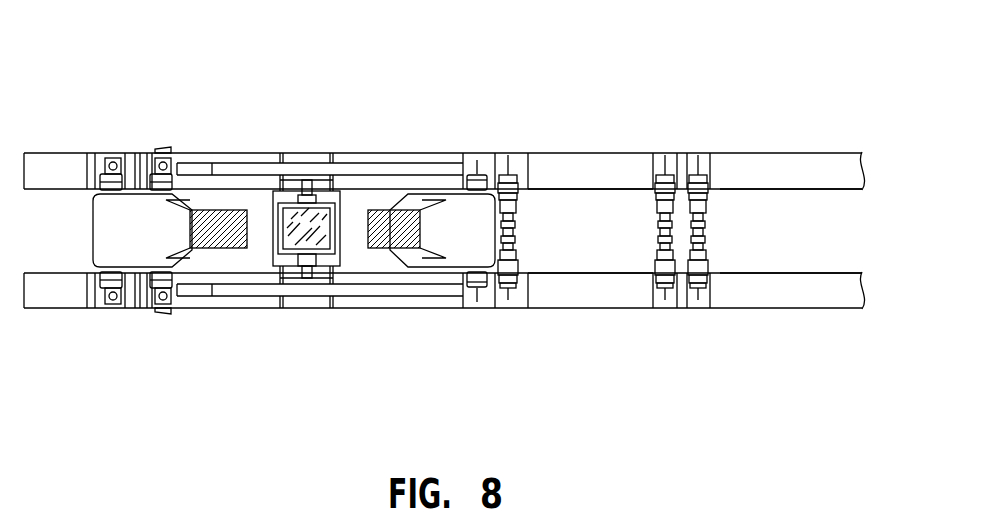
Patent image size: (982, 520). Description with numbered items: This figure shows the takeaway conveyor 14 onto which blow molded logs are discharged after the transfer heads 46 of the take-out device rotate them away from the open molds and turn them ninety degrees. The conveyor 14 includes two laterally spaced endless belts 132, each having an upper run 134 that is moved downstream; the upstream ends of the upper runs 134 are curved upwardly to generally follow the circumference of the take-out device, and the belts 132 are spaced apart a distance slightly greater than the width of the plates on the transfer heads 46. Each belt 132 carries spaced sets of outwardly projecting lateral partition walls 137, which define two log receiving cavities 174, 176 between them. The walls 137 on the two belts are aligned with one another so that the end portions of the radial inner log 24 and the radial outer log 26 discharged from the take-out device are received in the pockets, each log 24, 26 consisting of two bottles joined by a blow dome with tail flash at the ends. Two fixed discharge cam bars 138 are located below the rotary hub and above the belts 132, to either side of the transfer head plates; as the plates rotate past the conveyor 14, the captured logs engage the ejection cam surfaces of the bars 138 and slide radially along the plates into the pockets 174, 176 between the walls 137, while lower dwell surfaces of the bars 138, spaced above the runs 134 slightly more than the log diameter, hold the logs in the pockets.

The takeaway conveyor 14 is at (99, 112).
The radial inner log 24 is at (668, 156).
The radial outer log 26 is at (705, 158).
The transfer head 46 is at (212, 268).
The endless belt 132 is at (745, 268).
The upper run 134 is at (575, 272).
The lateral partition wall 137 is at (528, 153).
The discharge cam bar 138 is at (231, 168).
The log receiving cavity 174 is at (325, 304).
The log receiving cavity 176 is at (300, 300).